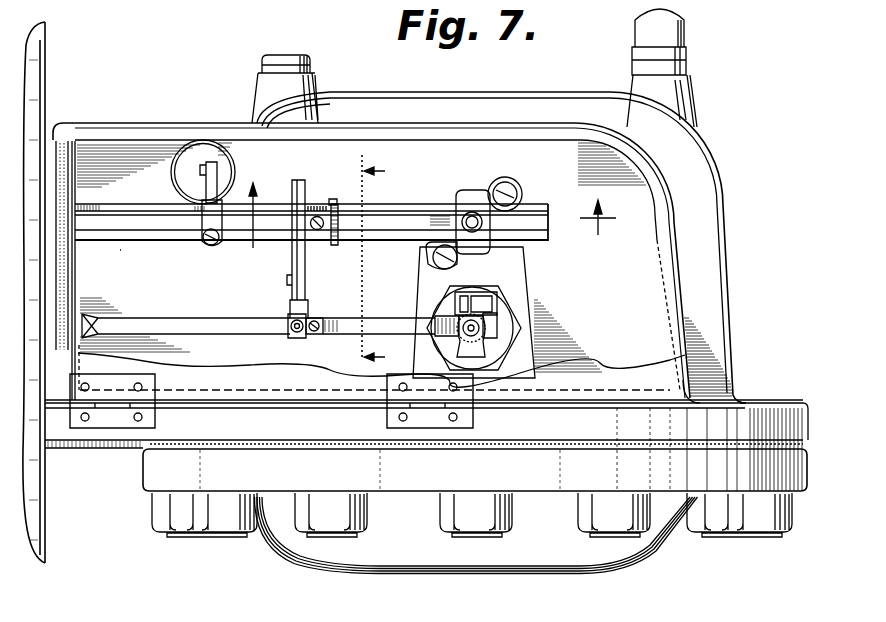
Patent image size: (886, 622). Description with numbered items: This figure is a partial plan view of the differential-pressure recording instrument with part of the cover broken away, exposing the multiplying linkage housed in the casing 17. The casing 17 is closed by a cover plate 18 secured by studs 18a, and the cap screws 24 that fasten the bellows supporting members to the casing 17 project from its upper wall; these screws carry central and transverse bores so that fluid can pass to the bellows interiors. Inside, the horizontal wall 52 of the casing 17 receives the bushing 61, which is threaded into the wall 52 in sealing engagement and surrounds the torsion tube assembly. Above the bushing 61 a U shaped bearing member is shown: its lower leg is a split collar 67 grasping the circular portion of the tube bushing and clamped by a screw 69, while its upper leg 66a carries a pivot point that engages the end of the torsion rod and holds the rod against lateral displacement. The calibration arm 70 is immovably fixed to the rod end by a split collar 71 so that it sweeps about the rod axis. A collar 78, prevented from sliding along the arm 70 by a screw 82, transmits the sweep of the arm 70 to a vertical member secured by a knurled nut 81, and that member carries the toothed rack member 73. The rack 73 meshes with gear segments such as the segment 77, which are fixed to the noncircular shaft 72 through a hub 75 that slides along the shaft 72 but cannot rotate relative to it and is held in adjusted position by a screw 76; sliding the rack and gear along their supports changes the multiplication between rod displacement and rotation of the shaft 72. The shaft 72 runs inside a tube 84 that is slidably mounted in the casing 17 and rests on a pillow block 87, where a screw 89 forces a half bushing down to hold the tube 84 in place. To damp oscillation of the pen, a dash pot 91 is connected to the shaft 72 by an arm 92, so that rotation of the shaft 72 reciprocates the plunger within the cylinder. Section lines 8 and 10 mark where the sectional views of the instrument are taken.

The casing 17 is at (722, 290).
The cap screws 24 is at (312, 63).
The dash pot 91 is at (203, 150).
The arm 92 is at (208, 184).
The section line 8 is at (432, 210).
The section line 10 is at (384, 256).
The shaft 72 is at (398, 206).
The tube 84 is at (548, 206).
The hub 75 is at (313, 210).
The gear segment 77 is at (336, 205).
The rack member 73 is at (302, 183).
The screw 76 is at (332, 240).
The screw 89 is at (456, 204).
The pillow block 87 is at (473, 200).
The calibration arm 70 is at (160, 318).
The knurled nut 81 is at (298, 337).
The collar 78 is at (313, 337).
The screw 82 is at (316, 318).
The bushing 61 is at (508, 305).
The upper leg 66a is at (500, 345).
The split collar 67 is at (460, 308).
The screw 69 is at (480, 316).
The split collar 71 is at (494, 318).
The horizontal wall 52 is at (244, 275).
The studs 18a is at (303, 520).
The cover plate 18 is at (428, 552).